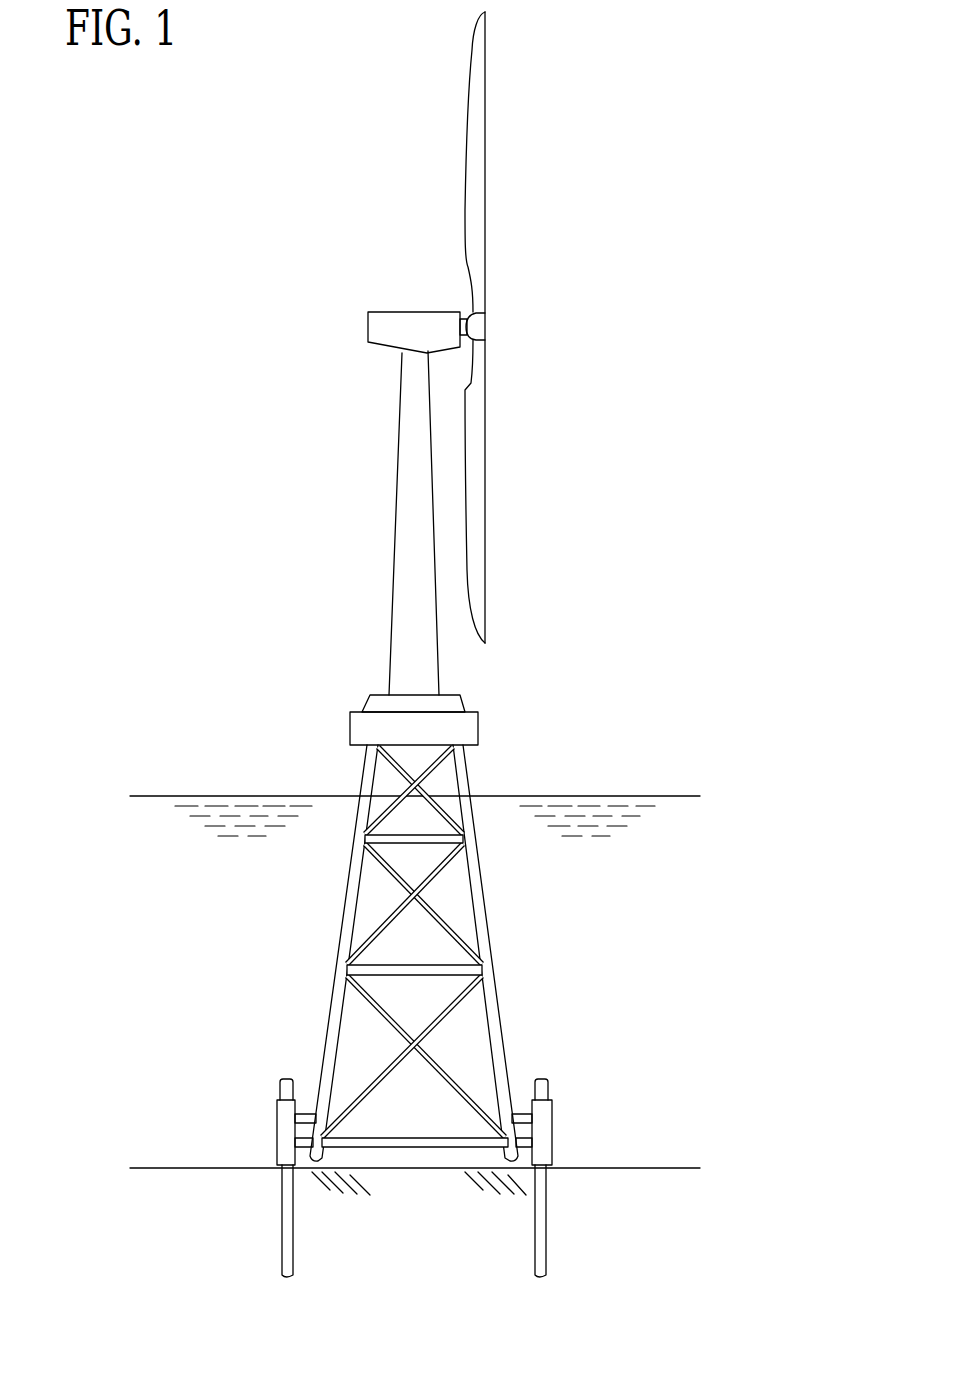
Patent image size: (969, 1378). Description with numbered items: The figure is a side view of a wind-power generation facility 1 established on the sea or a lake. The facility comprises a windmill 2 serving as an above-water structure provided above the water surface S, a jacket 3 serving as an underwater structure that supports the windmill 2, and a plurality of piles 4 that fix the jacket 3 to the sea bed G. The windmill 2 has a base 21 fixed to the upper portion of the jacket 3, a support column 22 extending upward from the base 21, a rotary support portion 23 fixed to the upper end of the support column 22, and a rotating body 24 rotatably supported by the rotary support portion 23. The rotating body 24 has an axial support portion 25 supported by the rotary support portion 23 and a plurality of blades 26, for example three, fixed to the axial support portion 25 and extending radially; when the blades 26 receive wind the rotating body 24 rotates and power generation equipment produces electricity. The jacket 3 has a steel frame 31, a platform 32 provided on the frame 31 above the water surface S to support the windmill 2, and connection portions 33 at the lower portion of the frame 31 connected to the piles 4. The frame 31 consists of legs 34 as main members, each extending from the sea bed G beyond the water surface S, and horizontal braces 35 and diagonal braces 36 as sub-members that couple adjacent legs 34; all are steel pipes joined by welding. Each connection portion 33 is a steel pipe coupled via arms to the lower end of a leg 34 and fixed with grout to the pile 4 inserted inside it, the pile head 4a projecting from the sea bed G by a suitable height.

The wind-power generation facility 1 is at (660, 302).
The windmill 2 is at (325, 360).
The jacket 3 is at (245, 918).
The pile 4 is at (262, 1215).
The pile head 4a is at (287, 1078).
The base 21 is at (364, 702).
The support column 22 is at (397, 528).
The rotary support portion 23 is at (405, 318).
The rotating body 24 is at (527, 280).
The axial support portion 25 is at (483, 324).
The blade 26 is at (478, 175).
The frame 31 is at (320, 868).
The platform 32 is at (358, 727).
The connection portion 33 is at (277, 1121).
The leg 34 is at (340, 948).
The horizontal brace 35 is at (415, 840).
The diagonal brace 36 is at (398, 780).
The water surface S is at (666, 796).
The sea bed G is at (665, 1168).